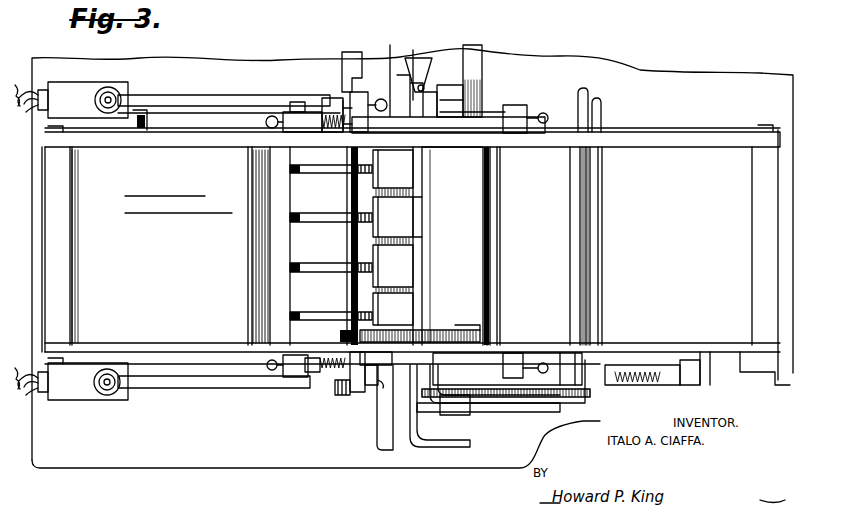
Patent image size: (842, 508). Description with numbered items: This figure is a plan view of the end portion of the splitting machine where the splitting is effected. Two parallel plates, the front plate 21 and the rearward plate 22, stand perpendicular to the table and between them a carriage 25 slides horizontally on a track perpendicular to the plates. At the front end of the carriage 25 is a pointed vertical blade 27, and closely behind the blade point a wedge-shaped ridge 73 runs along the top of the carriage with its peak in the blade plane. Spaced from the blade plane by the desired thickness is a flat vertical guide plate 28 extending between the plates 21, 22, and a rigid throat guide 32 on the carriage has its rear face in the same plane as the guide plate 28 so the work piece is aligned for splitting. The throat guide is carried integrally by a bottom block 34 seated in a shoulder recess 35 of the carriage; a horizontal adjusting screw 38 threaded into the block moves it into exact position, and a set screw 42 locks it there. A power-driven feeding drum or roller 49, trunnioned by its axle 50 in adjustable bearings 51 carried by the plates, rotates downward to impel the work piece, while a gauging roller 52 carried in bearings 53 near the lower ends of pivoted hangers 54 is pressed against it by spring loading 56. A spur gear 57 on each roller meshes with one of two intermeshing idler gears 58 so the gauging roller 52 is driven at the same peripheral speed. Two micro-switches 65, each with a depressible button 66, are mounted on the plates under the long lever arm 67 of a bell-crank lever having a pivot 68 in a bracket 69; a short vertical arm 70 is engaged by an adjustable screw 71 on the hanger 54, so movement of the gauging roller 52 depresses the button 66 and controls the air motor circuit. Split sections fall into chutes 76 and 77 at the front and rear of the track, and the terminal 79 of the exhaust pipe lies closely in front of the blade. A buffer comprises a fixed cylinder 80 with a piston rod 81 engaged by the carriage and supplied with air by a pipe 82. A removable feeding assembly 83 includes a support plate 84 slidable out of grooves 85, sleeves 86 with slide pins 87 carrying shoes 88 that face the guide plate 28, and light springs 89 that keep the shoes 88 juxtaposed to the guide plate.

The front parallel plate 21 is at (735, 350).
The rearward parallel plate 22 is at (728, 131).
The carriage 25 is at (433, 52).
The blade 27 is at (447, 110).
The guide plate 28 is at (424, 240).
The rigid throat guide 32 is at (410, 181).
The bottom block 34 is at (447, 94).
The shoulder recess 35 is at (430, 88).
The adjusting screw 38 is at (404, 112).
The set screw 42 is at (483, 62).
The feeding drum or roller 49 is at (485, 240).
The axle 50 is at (470, 410).
The adjustable bearing 51 is at (490, 112).
The gauging roller 52 is at (346, 240).
The bearings 53 is at (358, 436).
The hangers 54 is at (368, 150).
The spring loading 56 is at (304, 111).
The spur gear 57 is at (338, 337).
The idler gears 58 is at (522, 292).
The micro-switches 65 is at (86, 118).
The depressible button 66 is at (122, 88).
The long lever arm 67 is at (205, 104).
The pivot 68 is at (318, 112).
The bracket 69 is at (262, 398).
The short vertical arm 70 is at (330, 97).
The adjustable screw 71 is at (342, 380).
The wedge-shaped ridge 73 is at (342, 105).
The chute 76 is at (560, 258).
The chute 77 is at (262, 275).
The pipe terminal 79 is at (440, 337).
The fixed cylinder 80 is at (388, 425).
The piston rod 81 is at (412, 338).
The pipe 82 is at (428, 450).
The feeding assembly 83 is at (232, 197).
The support plate 84 is at (355, 230).
The grooves 85 is at (341, 266).
The sleeves 86 is at (320, 272).
The slide pin 87 is at (296, 312).
The shoe 88 is at (406, 218).
The light springs 89 is at (393, 220).